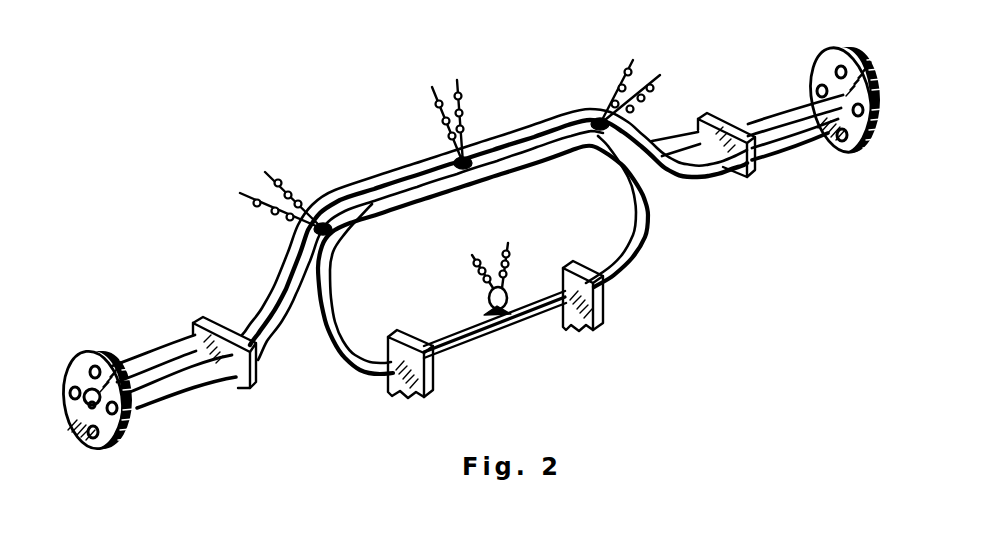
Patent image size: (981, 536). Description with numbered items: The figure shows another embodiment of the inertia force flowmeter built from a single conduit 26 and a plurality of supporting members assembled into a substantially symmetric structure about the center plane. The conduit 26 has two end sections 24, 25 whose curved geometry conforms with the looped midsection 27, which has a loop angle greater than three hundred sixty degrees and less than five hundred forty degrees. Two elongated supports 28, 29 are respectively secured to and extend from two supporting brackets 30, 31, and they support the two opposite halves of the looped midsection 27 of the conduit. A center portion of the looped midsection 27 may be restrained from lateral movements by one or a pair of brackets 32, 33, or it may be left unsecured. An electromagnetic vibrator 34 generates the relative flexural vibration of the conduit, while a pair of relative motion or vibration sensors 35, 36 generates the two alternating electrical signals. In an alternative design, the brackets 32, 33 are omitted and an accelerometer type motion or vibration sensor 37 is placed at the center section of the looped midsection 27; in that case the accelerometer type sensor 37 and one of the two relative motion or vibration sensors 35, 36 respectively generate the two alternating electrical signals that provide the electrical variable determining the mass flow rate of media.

The end section 24 is at (413, 166).
The end section 25 is at (560, 158).
The conduit 26 is at (652, 210).
The looped midsection 27 is at (530, 312).
The elongated support 28 is at (684, 130).
The elongated support 29 is at (310, 358).
The supporting bracket 30 is at (757, 166).
The supporting bracket 31 is at (195, 325).
The bracket 32 is at (432, 372).
The bracket 33 is at (600, 313).
The electromagnetic vibrator 34 is at (470, 158).
The relative motion or vibration sensor 35 is at (323, 222).
The relative motion or vibration sensor 36 is at (605, 118).
The accelerometer type motion or vibration sensor 37 is at (486, 309).